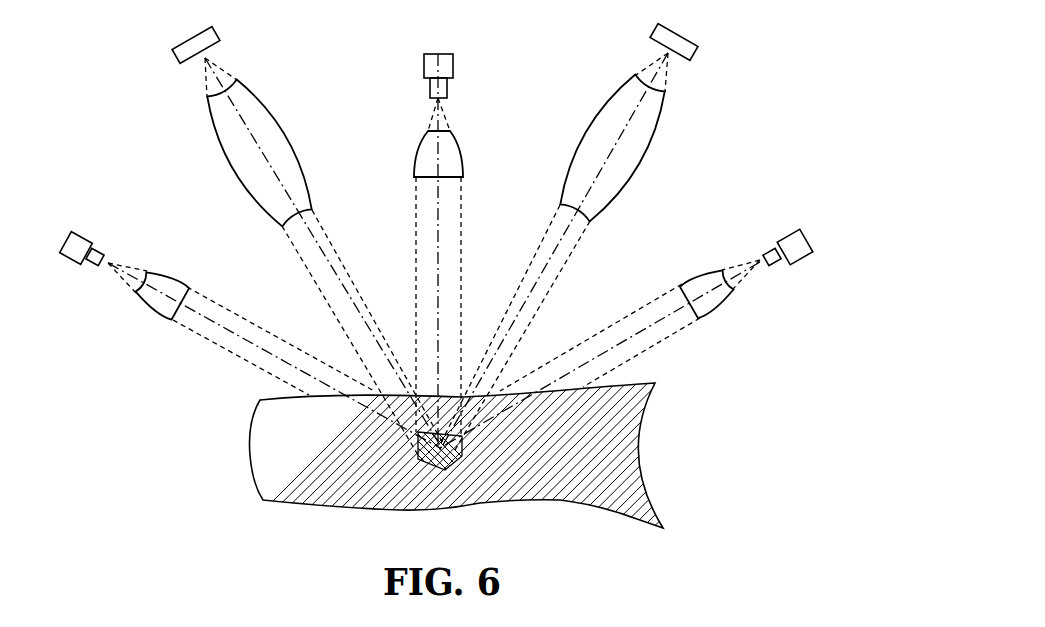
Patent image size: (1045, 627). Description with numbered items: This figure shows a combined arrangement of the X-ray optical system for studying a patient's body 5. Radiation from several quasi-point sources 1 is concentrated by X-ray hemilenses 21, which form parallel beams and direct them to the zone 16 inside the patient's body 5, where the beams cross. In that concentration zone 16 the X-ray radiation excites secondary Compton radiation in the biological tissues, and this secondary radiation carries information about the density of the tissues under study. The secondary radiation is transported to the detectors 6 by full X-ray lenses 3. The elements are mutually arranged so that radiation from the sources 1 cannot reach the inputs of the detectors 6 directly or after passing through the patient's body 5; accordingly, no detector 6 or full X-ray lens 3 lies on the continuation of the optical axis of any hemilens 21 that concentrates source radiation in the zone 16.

The quasi-point source 1 is at (78, 263).
The full X-ray lens 3 is at (232, 140).
The patient's body 5 is at (252, 416).
The detector 6 is at (180, 48).
The zone 16 is at (418, 459).
The X-ray hemilens 21 is at (158, 302).